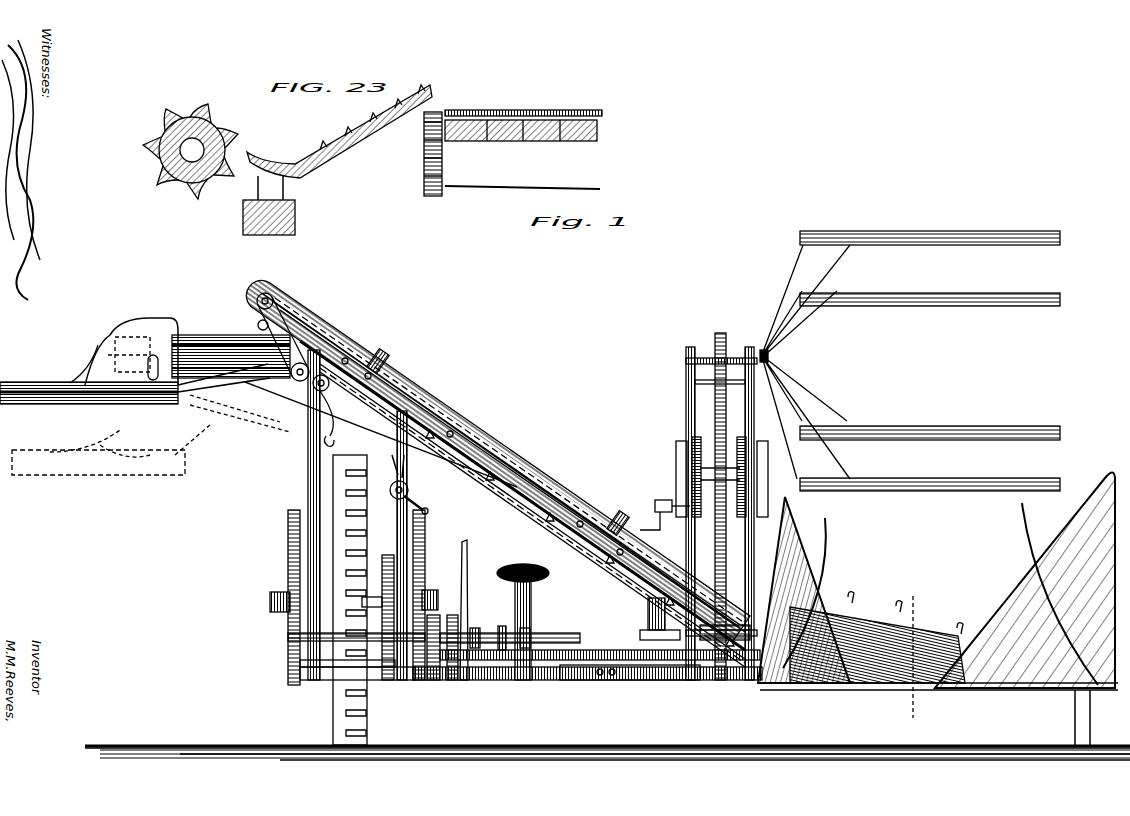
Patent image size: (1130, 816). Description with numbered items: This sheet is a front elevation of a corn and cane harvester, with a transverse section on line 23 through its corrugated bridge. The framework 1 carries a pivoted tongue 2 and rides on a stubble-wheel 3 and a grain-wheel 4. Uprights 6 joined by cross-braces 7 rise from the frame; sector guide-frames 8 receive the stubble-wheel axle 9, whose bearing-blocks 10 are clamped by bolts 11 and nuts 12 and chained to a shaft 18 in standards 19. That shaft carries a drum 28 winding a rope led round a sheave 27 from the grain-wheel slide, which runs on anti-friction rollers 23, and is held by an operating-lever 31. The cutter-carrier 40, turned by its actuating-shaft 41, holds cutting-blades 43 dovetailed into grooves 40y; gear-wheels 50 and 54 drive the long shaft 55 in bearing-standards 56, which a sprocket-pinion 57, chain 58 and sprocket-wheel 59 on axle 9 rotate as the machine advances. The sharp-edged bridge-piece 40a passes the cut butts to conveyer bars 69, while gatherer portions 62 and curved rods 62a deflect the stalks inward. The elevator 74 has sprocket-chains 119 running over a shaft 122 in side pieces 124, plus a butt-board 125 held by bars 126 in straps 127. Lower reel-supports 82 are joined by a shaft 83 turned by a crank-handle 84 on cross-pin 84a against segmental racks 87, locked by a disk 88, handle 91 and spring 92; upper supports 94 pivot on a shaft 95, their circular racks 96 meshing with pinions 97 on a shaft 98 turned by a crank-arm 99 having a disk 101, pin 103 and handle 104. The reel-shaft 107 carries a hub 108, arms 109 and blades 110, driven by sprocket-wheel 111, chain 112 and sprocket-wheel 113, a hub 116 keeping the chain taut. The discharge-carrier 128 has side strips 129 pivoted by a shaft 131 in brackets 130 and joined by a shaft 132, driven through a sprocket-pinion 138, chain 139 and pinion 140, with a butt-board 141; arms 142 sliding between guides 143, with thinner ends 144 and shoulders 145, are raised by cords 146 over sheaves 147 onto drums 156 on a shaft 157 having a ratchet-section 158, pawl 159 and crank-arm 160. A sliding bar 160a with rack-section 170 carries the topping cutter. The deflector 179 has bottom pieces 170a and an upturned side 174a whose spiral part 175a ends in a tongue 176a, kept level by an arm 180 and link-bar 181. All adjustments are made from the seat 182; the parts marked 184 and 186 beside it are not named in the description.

In FIG. 1, the base frame 1 is at (709, 684).
In FIG. 1, the frame cross bar 2 is at (530, 683).
In FIG. 1, the upright standard 3 is at (338, 704).
In FIG. 1, the rear post 4 is at (1076, 711).
In FIG. 1, the upright post 6 is at (308, 478).
In FIG. 1, the chain 7 is at (290, 518).
In FIG. 1, the bearing 8 is at (298, 686).
In FIG. 1, the bracket 9 is at (372, 598).
In FIG. 1, the sprocket wheel 10 is at (272, 598).
In FIG. 1, the shaft 11 is at (352, 572).
In FIG. 1, the collar 12 is at (274, 612).
In FIG. 1, the shaft 18 is at (338, 640).
In FIG. 1, the frame bar 19 is at (305, 656).
In FIG. 1, the section line 23 is at (922, 601).
In FIG. 1, the bearing 27 is at (500, 684).
In FIG. 1, the shaft 28 is at (500, 630).
In FIG. 1, the lever 31 is at (468, 576).
In FIG. 23, the rotary cutter shaft 40 is at (282, 96).
In FIG. 1, the rotary cutter shaft 40 is at (898, 684).
In FIG. 23, the inclined trough 40a is at (352, 128).
In FIG. 1, the inclined trough 40a is at (922, 640).
In FIG. 23, the cutter hub 40y is at (222, 112).
In FIG. 1, the frame bar 41 is at (602, 680).
In FIG. 23, the cutter blade 43 is at (156, 137).
In FIG. 1, the gear 50 is at (466, 630).
In FIG. 1, the bearing 54 is at (452, 680).
In FIG. 1, the rod 55 is at (606, 644).
In FIG. 1, the gear 56 is at (442, 640).
In FIG. 1, the collar 57 is at (484, 624).
In FIG. 1, the chain 58 is at (386, 558).
In FIG. 1, the sprocket 59 is at (380, 566).
In FIG. 1, the side board 62 is at (815, 576).
In FIG. 1, the curved guard 62a is at (828, 532).
In FIG. 1, the hook 69 is at (904, 611).
In FIG. 1, the conveyor rail 74 is at (522, 504).
In FIG. 1, the sprocket 82 is at (721, 586).
In FIG. 1, the chain 83 is at (724, 600).
In FIG. 1, the bracket 84 is at (660, 619).
In FIG. 1, the bracket arm 84a is at (656, 608).
In FIG. 1, the lower sprocket 87 is at (725, 641).
In FIG. 1, the link 88 is at (666, 602).
In FIG. 1, the rod 91 is at (646, 636).
In FIG. 1, the arm 92 is at (650, 600).
In FIG. 1, the tower upright 94 is at (686, 410).
In FIG. 1, the cross bar 95 is at (708, 466).
In FIG. 1, the guide 96 is at (678, 460).
In FIG. 1, the rack 97 is at (720, 484).
In FIG. 1, the lever 98 is at (682, 492).
In FIG. 1, the bracket 99 is at (654, 504).
In FIG. 1, the pin 101 is at (638, 479).
In FIG. 1, the arm 103 is at (676, 535).
In FIG. 1, the link 104 is at (650, 520).
In FIG. 1, the cross head 107 is at (706, 358).
In FIG. 1, the pivot block 108 is at (770, 356).
In FIG. 1, the radiating arm 109 is at (812, 268).
In FIG. 1, the shelf bar 110 is at (924, 264).
In FIG. 1, the chain 111 is at (722, 336).
In FIG. 1, the cross bar 112 is at (712, 392).
In FIG. 1, the lower bearing 113 is at (736, 656).
In FIG. 1, the rod 116 is at (724, 468).
In FIG. 1, the rod 119 is at (500, 470).
In FIG. 1, the upper pulley 122 is at (288, 308).
In FIG. 1, the rail 124 is at (522, 498).
In FIG. 1, the inclined conveyor frame 125 is at (524, 458).
In FIG. 1, the bracket 126 is at (384, 364).
In FIG. 1, the hanger 127 is at (384, 398).
In FIG. 1, the feed beam 128 is at (212, 338).
In FIG. 1, the link 129 is at (232, 380).
In FIG. 1, the pulley 130 is at (298, 370).
In FIG. 1, the link 131 is at (235, 408).
In FIG. 1, the guide 132 is at (90, 370).
In FIG. 1, the link arm 138 is at (262, 321).
In FIG. 1, the rod 139 is at (318, 345).
In FIG. 1, the pivot 140 is at (258, 302).
In FIG. 1, the beam 141 is at (188, 340).
In FIG. 1, the link 142 is at (242, 424).
In FIG. 1, the arm 143 is at (308, 460).
In FIG. 1, the hook 144 is at (332, 442).
In FIG. 1, the link 145 is at (298, 449).
In FIG. 1, the cord 146 is at (337, 413).
In FIG. 1, the pulley 147 is at (331, 395).
In FIG. 1, the cam 156 is at (410, 494).
In FIG. 1, the lever 157 is at (451, 475).
In FIG. 1, the pawl 158 is at (404, 484).
In FIG. 1, the lever 159 is at (404, 470).
In FIG. 1, the crank 160 is at (433, 507).
In FIG. 1, the rod 160a is at (300, 338).
In FIG. 1, the chute 170 is at (70, 372).
In FIG. 1, the chute bottom 170a is at (114, 405).
In FIG. 1, the plate 174a is at (146, 378).
In FIG. 1, the hopper 175a is at (128, 336).
In FIG. 1, the guide 176a is at (88, 404).
In FIG. 1, the plate 179 is at (76, 378).
In FIG. 1, the roller 180 is at (156, 356).
In FIG. 1, the bar 181 is at (194, 386).
In FIG. 1, the hand wheel 182 is at (523, 564).
In FIG. 1, the stem 184 is at (532, 600).
In FIG. 1, the collar 186 is at (515, 600).